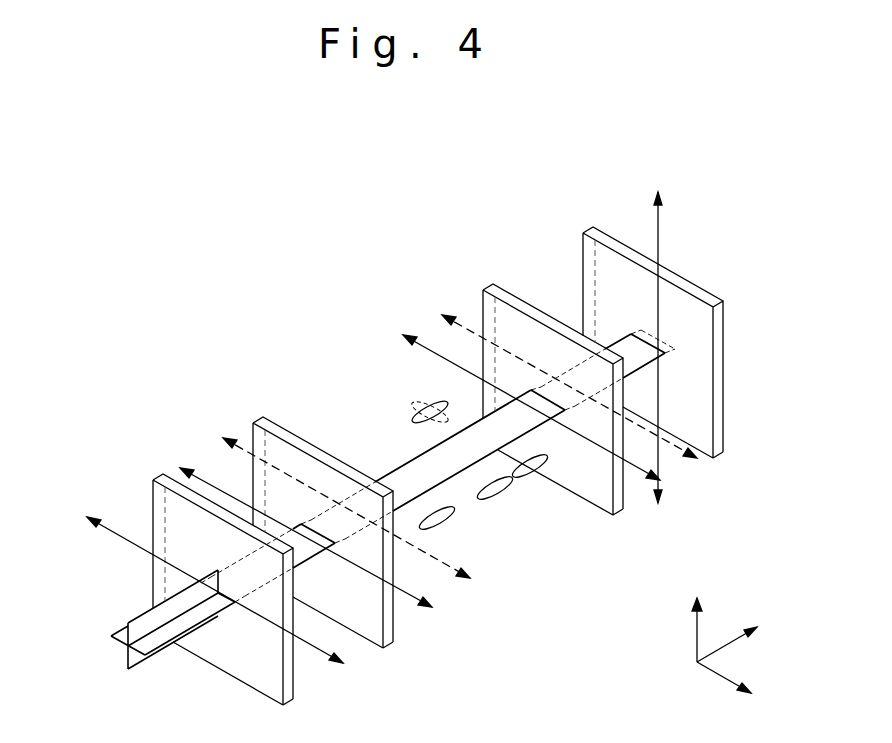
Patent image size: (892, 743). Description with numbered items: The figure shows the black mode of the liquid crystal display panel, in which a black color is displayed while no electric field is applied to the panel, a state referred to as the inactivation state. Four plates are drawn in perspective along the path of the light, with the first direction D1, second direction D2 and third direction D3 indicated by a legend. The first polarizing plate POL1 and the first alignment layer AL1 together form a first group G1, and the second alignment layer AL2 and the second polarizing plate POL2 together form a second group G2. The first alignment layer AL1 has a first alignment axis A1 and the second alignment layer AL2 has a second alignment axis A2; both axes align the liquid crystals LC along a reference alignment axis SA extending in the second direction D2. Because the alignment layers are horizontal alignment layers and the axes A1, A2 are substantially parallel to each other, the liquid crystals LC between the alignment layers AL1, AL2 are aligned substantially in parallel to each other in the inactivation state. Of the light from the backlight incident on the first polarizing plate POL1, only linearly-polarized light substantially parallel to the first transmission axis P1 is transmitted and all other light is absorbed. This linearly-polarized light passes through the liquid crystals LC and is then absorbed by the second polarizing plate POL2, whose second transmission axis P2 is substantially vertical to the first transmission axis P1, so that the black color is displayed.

The first group G1 is at (222, 352).
The second group G2 is at (551, 162).
The first polarizing plate POL1 is at (157, 478).
The second polarizing plate POL2 is at (584, 231).
The first alignment layer AL1 is at (256, 421).
The second alignment layer AL2 is at (484, 288).
The liquid crystals LC is at (424, 405).
The reference alignment axis SA is at (452, 432).
The first alignment axis A1 is at (302, 522).
The second alignment axis A2 is at (530, 393).
The first transmission axis P1 is at (215, 578).
The second transmission axis P2 is at (645, 339).
The first direction D1 is at (693, 615).
The second direction D2 is at (738, 693).
The third direction D3 is at (741, 636).